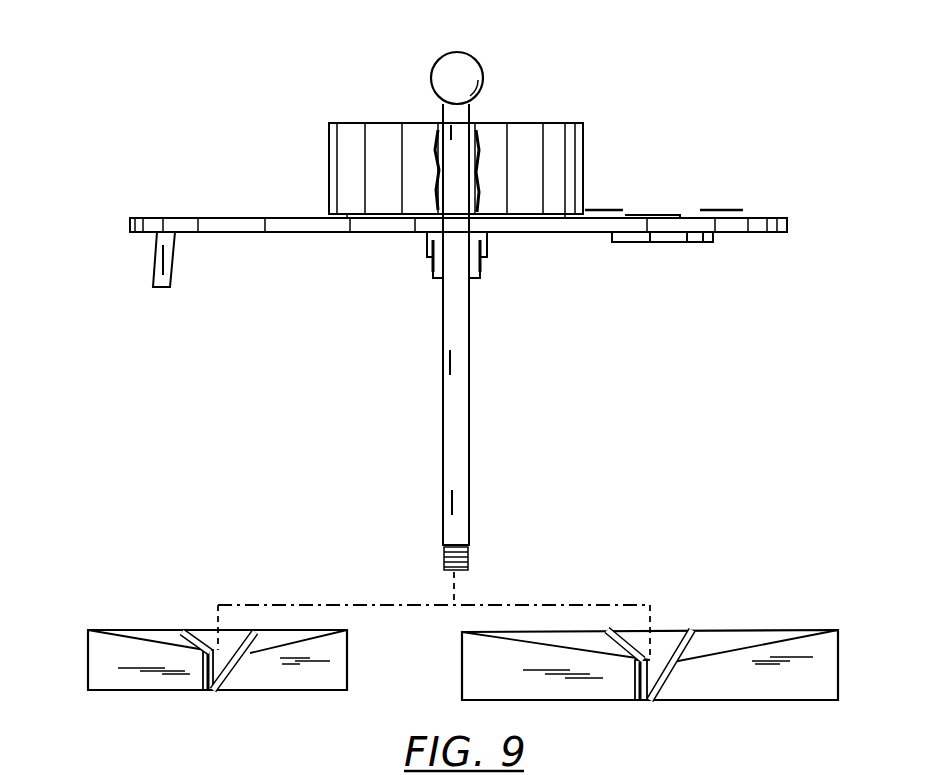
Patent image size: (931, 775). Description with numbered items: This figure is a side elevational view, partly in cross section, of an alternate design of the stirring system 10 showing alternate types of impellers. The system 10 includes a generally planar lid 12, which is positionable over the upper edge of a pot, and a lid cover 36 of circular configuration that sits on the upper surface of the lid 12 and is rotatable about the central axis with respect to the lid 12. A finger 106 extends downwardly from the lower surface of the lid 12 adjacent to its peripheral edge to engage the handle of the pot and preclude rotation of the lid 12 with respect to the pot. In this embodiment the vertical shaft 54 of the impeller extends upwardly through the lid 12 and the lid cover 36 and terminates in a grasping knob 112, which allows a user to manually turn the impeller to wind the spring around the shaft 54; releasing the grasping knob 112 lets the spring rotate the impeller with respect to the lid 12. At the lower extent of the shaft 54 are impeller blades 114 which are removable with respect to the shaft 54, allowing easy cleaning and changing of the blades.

The grasping knob 112 is at (433, 68).
The lid cover 36 is at (513, 163).
The system 10 is at (721, 208).
The lid 12 is at (248, 216).
The finger 106 is at (152, 264).
The vertical shaft 54 is at (462, 360).
The impeller blades 114 is at (765, 655).